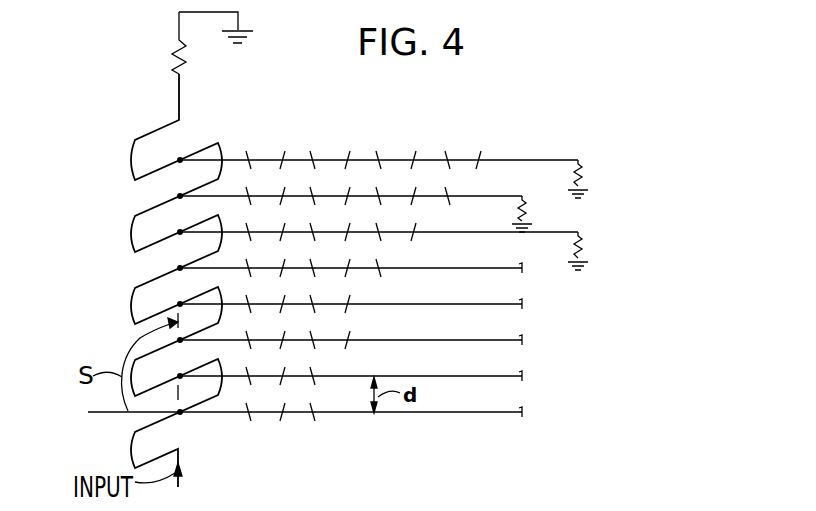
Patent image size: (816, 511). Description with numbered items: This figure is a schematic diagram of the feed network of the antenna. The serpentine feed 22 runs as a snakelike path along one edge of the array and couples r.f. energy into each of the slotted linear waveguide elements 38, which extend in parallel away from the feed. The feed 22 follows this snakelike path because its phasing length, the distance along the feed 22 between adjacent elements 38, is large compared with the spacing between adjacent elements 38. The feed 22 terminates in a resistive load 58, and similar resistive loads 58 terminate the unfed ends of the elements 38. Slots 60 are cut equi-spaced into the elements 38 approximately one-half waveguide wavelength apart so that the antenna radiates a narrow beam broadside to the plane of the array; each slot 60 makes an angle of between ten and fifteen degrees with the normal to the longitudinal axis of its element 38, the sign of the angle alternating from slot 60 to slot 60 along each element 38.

The serpentine feed 22 is at (131, 158).
The slotted linear waveguide element 38 is at (500, 340).
The resistive load 58 is at (183, 58).
The slot 60 is at (312, 419).